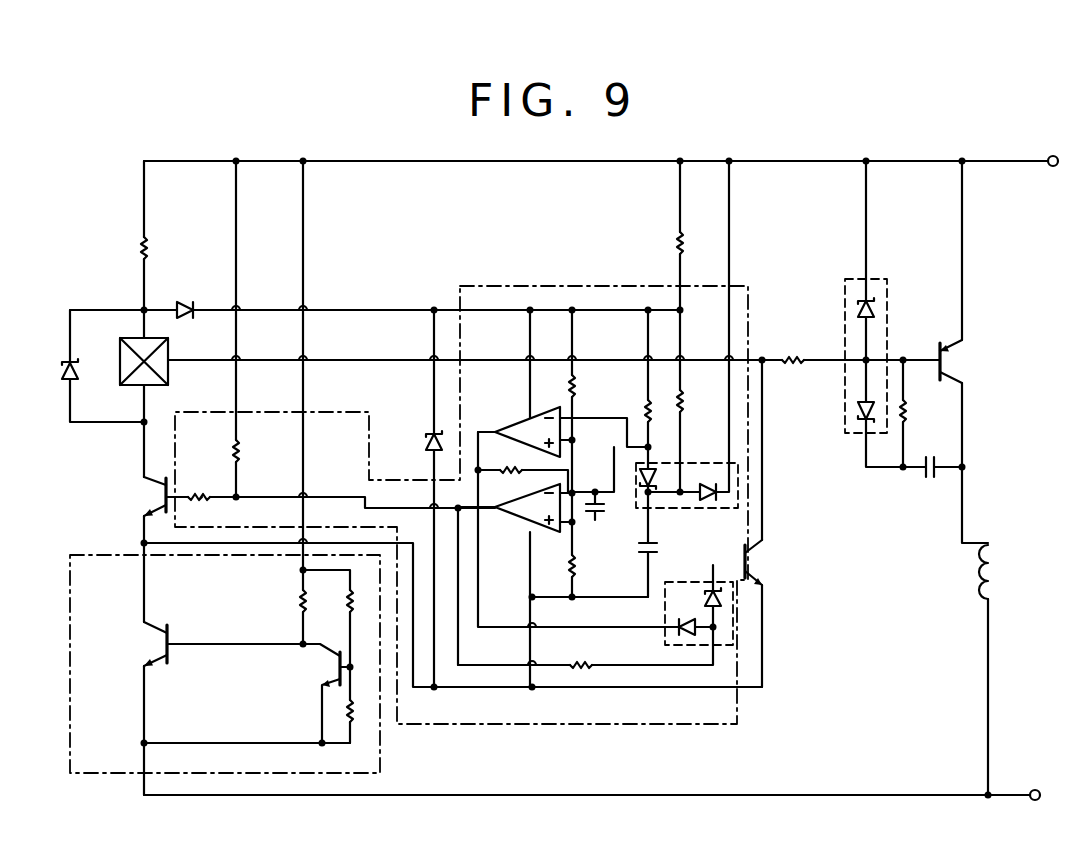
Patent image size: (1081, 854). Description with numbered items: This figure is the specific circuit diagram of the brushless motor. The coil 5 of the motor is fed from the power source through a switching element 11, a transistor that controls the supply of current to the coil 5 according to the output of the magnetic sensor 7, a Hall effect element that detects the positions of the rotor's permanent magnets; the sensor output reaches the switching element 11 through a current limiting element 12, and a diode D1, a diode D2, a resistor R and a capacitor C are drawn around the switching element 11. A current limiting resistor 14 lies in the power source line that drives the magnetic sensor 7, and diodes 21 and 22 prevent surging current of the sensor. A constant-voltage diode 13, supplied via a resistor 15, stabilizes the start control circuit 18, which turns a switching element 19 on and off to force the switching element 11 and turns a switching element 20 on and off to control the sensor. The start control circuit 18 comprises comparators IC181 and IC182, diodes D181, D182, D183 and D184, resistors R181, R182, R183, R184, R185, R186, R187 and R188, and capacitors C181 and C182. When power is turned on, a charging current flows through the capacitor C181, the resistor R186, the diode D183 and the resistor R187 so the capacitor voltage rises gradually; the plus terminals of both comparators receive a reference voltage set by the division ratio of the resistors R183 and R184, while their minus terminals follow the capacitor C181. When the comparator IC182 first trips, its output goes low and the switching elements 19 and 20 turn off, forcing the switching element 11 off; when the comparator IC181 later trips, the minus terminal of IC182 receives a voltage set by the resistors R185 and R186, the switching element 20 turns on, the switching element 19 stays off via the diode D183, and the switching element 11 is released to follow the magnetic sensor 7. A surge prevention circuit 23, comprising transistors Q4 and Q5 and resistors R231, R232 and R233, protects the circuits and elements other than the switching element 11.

The current limiting resistor 14 is at (142, 247).
The diode 22 is at (184, 303).
The diode 21 is at (78, 369).
The magnetic sensor 7 is at (168, 352).
The switching element 20 is at (160, 498).
The surge prevention circuit 23 is at (118, 555).
The start control circuit 18 is at (510, 286).
The constant-voltage diode 13 is at (427, 440).
The resistor 15 is at (678, 243).
The current limiting element 12 is at (791, 358).
The diode D1 is at (875, 309).
The diode D2 is at (858, 410).
The switching element 11 is at (950, 365).
The resistor R is at (908, 411).
The capacitor C is at (923, 479).
The coil 5 is at (998, 583).
The switching element 19 is at (762, 561).
The resistor R181 is at (200, 495).
The resistor R182 is at (241, 451).
The comparator IC181 is at (512, 427).
The comparator IC182 is at (513, 514).
The resistor R183 is at (577, 390).
The resistor R186 is at (645, 415).
The resistor R187 is at (690, 394).
The resistor R185 is at (509, 470).
The capacitor C182 is at (605, 506).
The diode D183 is at (655, 486).
The diode D184 is at (708, 500).
The capacitor C181 is at (658, 548).
The resistor R184 is at (578, 568).
The diode D182 is at (705, 599).
The diode D181 is at (684, 633).
The resistor R188 is at (582, 670).
The resistor R231 is at (300, 600).
The resistor R232 is at (348, 603).
The transistor Q4 is at (160, 648).
The transistor Q5 is at (335, 673).
The resistor R233 is at (354, 719).